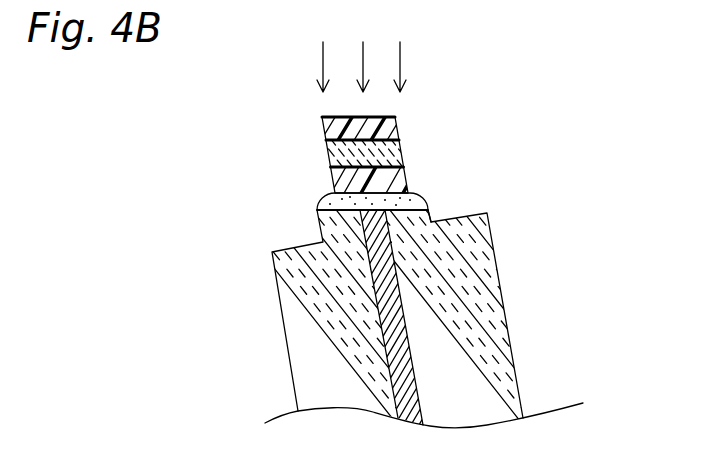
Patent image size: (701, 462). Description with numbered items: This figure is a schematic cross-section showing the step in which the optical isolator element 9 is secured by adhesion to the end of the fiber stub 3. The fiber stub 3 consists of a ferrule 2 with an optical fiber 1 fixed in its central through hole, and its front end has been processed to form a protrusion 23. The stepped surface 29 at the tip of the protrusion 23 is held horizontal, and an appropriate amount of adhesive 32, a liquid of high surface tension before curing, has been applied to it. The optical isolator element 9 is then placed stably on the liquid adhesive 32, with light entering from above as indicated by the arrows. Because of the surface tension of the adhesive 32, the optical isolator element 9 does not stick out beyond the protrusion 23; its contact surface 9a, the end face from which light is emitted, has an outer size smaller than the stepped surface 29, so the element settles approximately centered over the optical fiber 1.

The optical fiber 1 is at (390, 323).
The ferrule 2 is at (460, 282).
The fiber stub 3 is at (443, 302).
The optical isolator element 9 is at (328, 146).
The contact surface 9a is at (357, 175).
The protrusion 23 is at (432, 211).
The stepped surface 29 is at (349, 195).
The adhesive 32 is at (419, 196).